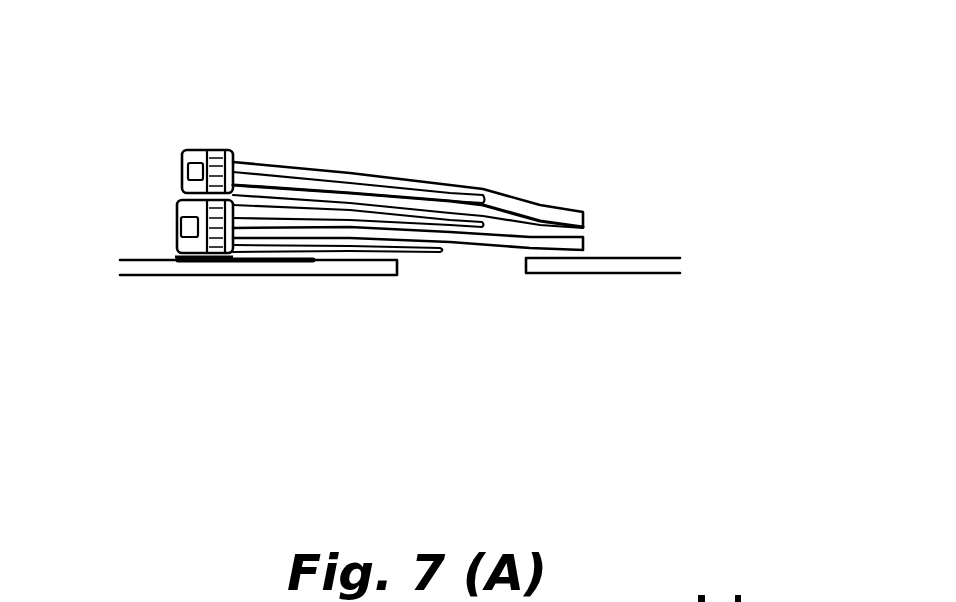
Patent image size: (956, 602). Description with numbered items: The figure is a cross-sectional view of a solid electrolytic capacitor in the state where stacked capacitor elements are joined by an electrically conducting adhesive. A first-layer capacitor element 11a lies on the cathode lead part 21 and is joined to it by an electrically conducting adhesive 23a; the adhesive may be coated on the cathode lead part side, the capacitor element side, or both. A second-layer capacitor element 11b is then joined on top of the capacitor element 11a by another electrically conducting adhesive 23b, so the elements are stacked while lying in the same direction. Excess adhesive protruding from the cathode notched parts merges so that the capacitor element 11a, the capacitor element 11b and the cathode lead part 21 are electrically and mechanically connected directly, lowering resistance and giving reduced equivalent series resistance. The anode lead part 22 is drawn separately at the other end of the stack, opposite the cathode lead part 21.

The capacitor element 11a is at (513, 243).
The capacitor element 11b is at (543, 210).
The cathode lead part 21 is at (312, 267).
The anode lead part 22 is at (680, 273).
The electrically conducting adhesive 23a is at (204, 276).
The electrically conducting adhesive 23b is at (160, 178).